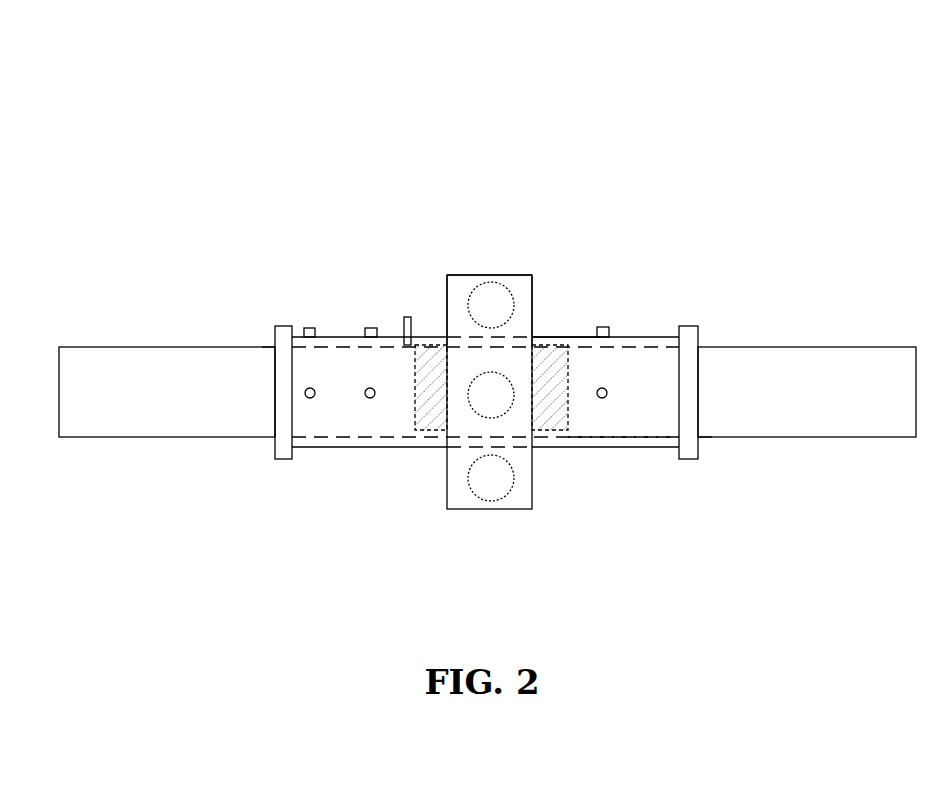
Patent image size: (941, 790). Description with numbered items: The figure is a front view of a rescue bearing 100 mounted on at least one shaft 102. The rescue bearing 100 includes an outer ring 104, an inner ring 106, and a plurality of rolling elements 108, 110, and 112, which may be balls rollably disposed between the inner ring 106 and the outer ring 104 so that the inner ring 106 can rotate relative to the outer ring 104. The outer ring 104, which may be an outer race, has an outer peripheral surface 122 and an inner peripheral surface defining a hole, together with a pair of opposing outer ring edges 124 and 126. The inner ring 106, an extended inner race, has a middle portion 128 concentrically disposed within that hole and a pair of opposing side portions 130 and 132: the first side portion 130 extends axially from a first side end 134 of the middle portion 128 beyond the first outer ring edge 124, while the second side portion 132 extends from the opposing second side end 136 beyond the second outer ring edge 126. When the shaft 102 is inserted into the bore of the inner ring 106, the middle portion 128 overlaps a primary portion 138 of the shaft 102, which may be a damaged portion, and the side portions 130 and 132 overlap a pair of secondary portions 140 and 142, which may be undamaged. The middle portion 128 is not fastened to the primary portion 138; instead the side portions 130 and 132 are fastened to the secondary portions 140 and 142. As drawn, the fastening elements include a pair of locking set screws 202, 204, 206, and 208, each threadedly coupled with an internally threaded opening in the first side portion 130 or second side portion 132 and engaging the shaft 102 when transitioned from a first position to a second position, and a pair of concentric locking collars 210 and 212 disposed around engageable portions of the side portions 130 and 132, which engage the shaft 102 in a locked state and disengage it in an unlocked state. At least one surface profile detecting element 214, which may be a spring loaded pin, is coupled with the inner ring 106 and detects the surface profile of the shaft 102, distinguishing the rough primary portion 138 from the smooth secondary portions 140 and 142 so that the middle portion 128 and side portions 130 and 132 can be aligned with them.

The rescue bearing 100 is at (437, 94).
The shaft 102 is at (487, 354).
The outer ring 104 is at (477, 250).
The inner ring 106 is at (560, 308).
The rolling element 108 is at (500, 263).
The rolling element 110 is at (485, 400).
The rolling element 112 is at (459, 517).
The outer peripheral surface 122 is at (515, 221).
The first outer ring edge 124 is at (420, 292).
The second outer ring edge 126 is at (560, 293).
The middle portion 128 is at (485, 454).
The first side portion 130 is at (343, 337).
The second side portion 132 is at (653, 350).
The first side end 134 is at (416, 439).
The second side end 136 is at (596, 475).
The primary portion 138 is at (628, 464).
The secondary portion 140 is at (277, 445).
The secondary portion 142 is at (724, 473).
The locking set screw 202 is at (340, 298).
The locking set screw 204 is at (337, 461).
The locking set screw 206 is at (657, 292).
The locking set screw 208 is at (641, 501).
The concentric locking collar 210 is at (226, 292).
The concentric locking collar 212 is at (744, 487).
The surface profile detecting element 214 is at (366, 264).